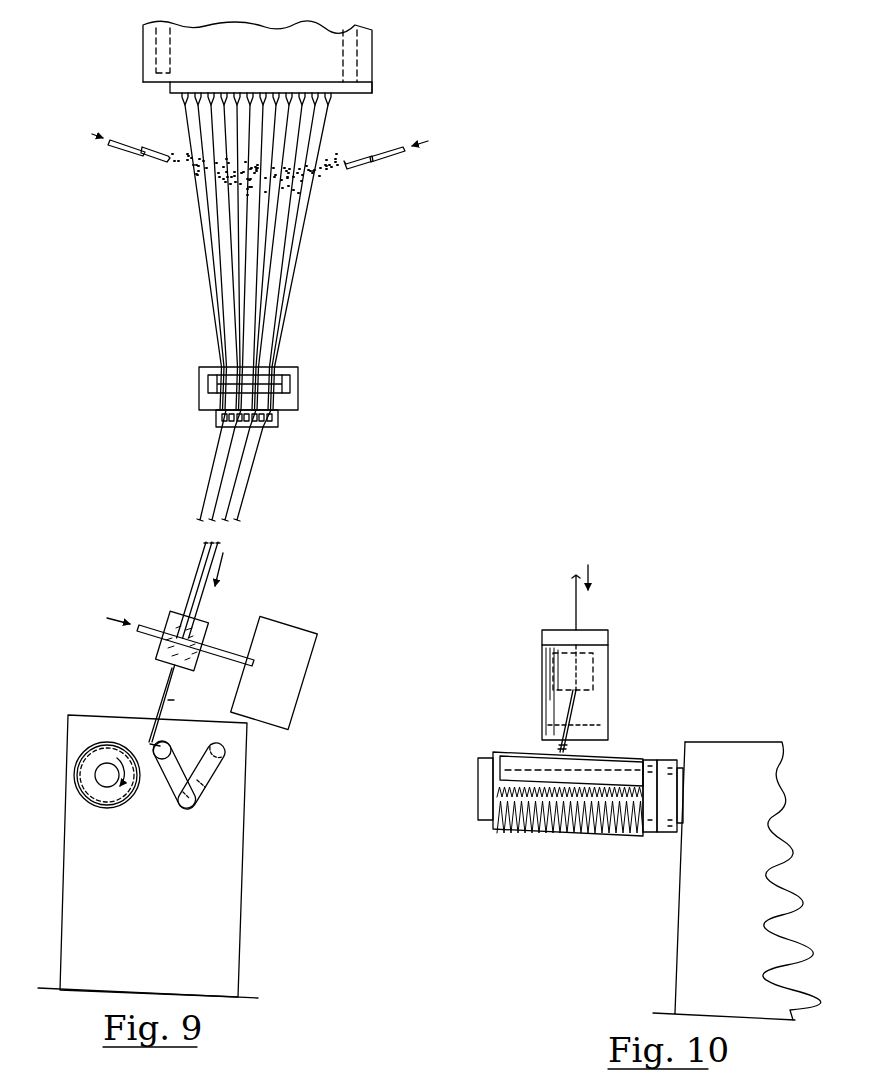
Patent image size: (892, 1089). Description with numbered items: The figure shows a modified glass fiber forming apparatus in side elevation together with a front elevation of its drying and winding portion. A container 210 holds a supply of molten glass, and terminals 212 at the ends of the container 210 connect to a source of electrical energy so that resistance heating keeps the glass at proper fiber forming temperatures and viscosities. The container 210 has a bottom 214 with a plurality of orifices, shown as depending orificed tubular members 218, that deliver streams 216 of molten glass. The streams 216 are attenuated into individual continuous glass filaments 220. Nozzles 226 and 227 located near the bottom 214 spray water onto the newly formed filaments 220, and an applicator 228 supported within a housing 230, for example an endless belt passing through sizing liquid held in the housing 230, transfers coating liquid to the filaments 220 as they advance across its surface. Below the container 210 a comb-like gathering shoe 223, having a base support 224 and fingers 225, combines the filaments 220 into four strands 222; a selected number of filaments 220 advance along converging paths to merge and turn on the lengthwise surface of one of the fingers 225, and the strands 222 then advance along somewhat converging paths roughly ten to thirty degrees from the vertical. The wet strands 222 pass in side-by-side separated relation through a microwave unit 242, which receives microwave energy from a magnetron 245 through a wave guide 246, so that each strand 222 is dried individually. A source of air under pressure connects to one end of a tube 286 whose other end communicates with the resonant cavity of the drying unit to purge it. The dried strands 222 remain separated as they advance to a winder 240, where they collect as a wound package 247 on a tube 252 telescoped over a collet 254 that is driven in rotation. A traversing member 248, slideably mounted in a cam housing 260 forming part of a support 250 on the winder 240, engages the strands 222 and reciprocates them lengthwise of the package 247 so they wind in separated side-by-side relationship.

In FIG. 9, the container 210 is at (372, 53).
In FIG. 9, the terminals 212 is at (143, 45).
In FIG. 9, the bottom 214 is at (330, 93).
In FIG. 9, the streams 216 is at (224, 103).
In FIG. 9, the tubular members 218 is at (183, 94).
In FIG. 9, the continuous glass filaments 220 is at (273, 240).
In FIG. 9, the strands 222 is at (231, 465).
In FIG. 10, the strands 222 is at (576, 610).
In FIG. 9, the comb-like gathering shoe 223 is at (284, 422).
In FIG. 9, the base support 224 is at (216, 424).
In FIG. 9, the fingers 225 is at (218, 418).
In FIG. 9, the nozzle 226 is at (152, 160).
In FIG. 9, the nozzle 227 is at (350, 167).
In FIG. 9, the applicator 228 is at (277, 383).
In FIG. 9, the housing 230 is at (300, 378).
In FIG. 9, the winder 240 is at (243, 843).
In FIG. 10, the winder 240 is at (723, 742).
In FIG. 9, the microwave unit 242 is at (170, 615).
In FIG. 10, the microwave unit 242 is at (595, 660).
In FIG. 9, the magnetron 245 is at (287, 625).
In FIG. 10, the magnetron 245 is at (610, 689).
In FIG. 9, the wave guide 246 is at (235, 650).
In FIG. 9, the wound package 247 is at (78, 757).
In FIG. 10, the wound package 247 is at (567, 820).
In FIG. 9, the traversing member 248 is at (145, 745).
In FIG. 9, the support 250 is at (215, 790).
In FIG. 10, the support 250 is at (660, 848).
In FIG. 9, the tube 252 is at (83, 781).
In FIG. 10, the tube 252 is at (493, 756).
In FIG. 9, the collet 254 is at (90, 783).
In FIG. 10, the collet 254 is at (478, 774).
In FIG. 9, the cam housing 260 is at (165, 742).
In FIG. 10, the cam housing 260 is at (600, 767).
In FIG. 9, the tube 286 is at (160, 627).